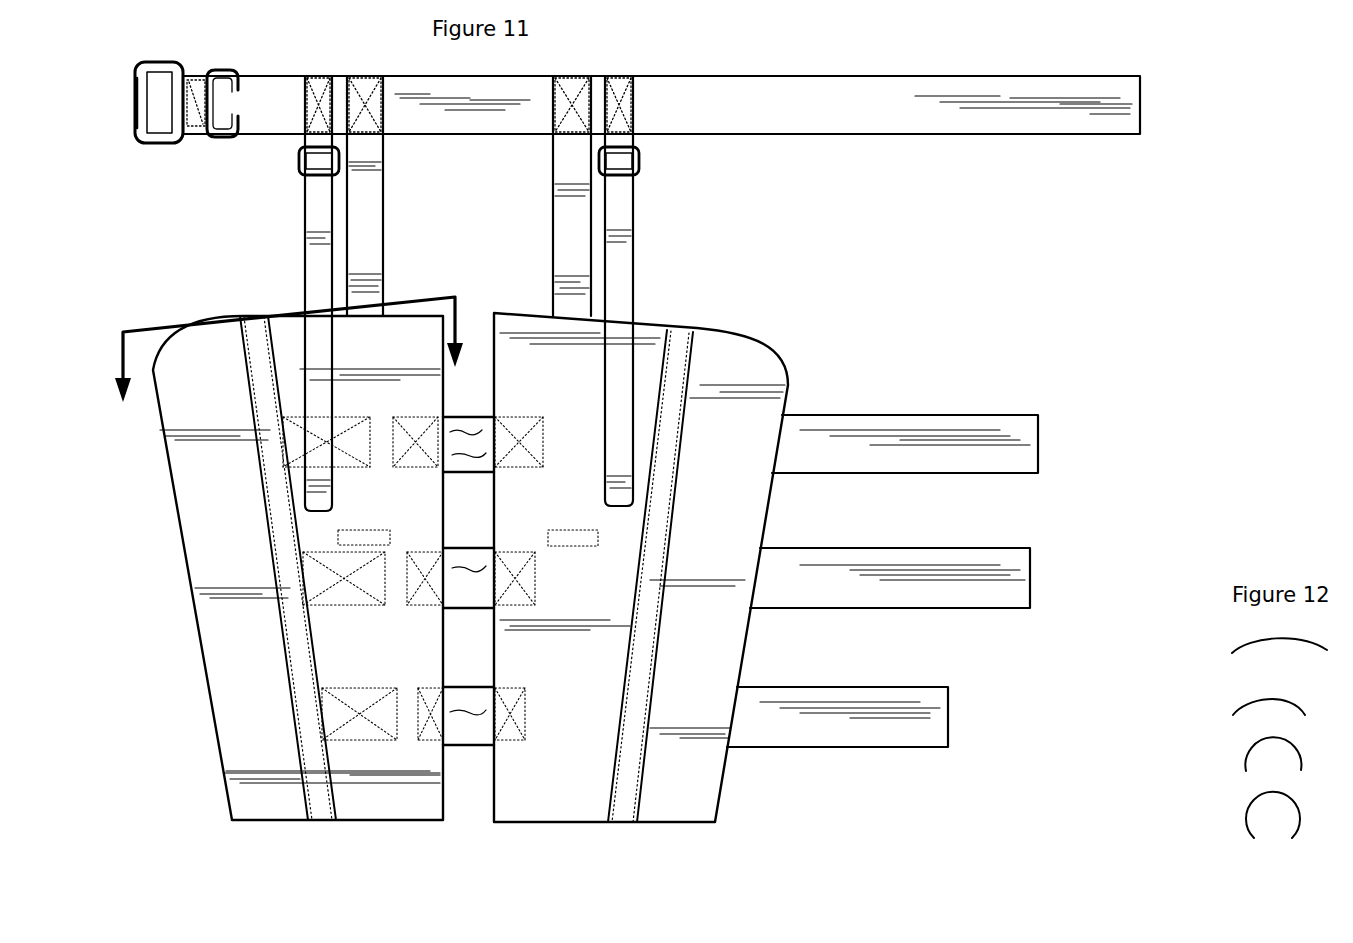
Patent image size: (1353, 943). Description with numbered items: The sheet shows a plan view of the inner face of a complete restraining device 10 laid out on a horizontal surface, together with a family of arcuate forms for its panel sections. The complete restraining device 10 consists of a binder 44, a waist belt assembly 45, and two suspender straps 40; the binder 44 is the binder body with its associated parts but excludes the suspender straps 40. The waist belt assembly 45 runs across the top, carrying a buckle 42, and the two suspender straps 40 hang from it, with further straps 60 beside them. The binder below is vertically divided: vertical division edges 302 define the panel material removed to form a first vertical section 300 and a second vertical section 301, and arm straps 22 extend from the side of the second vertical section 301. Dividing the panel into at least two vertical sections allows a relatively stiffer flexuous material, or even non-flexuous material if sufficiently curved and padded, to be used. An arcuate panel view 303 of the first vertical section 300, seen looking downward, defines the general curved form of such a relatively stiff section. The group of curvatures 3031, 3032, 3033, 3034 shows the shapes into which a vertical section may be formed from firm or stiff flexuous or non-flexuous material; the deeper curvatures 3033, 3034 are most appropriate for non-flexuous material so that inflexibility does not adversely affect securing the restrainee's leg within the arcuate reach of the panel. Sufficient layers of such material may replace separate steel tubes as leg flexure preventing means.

In FIG. 11, the complete restraining device 10 is at (880, 360).
In FIG. 11, the arm straps 22 is at (882, 581).
In FIG. 11, the suspender straps 40 is at (365, 223).
In FIG. 11, the waist belt buckle 42 is at (385, 75).
In FIG. 11, the binder 44 is at (220, 774).
In FIG. 11, the waist belt assembly 45 is at (672, 76).
In FIG. 11, the chest straps with buckles 60 is at (315, 250).
In FIG. 11, the first vertical section 300 is at (425, 816).
In FIG. 11, the second vertical section 301 is at (555, 807).
In FIG. 11, the vertical division edges 302 is at (497, 790).
In FIG. 11, the arcuate panel view 303 is at (210, 320).
In FIG. 12, the curvature 3031 is at (1250, 641).
In FIG. 12, the curvature 3032 is at (1246, 707).
In FIG. 12, the curvature 3033 is at (1245, 757).
In FIG. 12, the curvature 3034 is at (1246, 814).